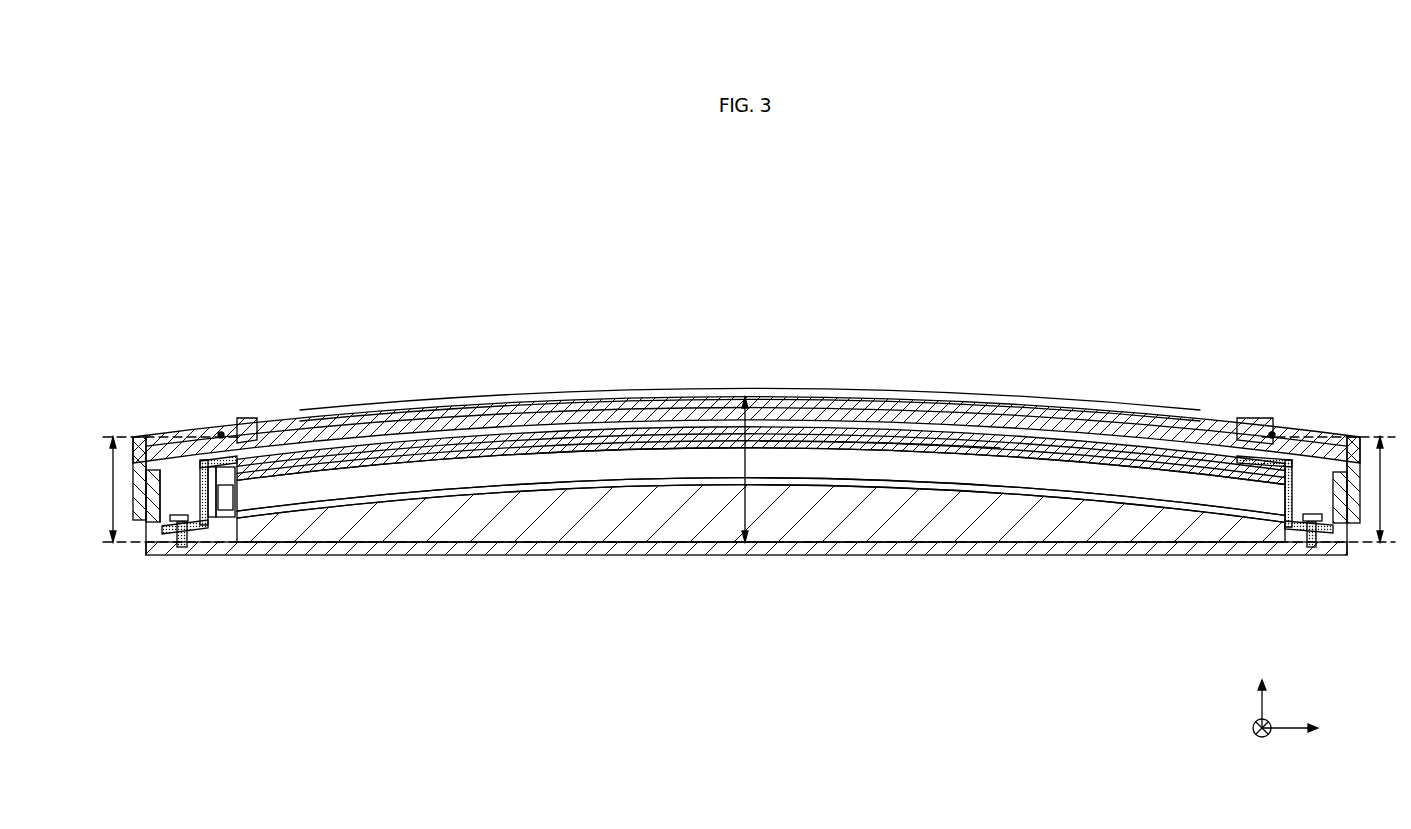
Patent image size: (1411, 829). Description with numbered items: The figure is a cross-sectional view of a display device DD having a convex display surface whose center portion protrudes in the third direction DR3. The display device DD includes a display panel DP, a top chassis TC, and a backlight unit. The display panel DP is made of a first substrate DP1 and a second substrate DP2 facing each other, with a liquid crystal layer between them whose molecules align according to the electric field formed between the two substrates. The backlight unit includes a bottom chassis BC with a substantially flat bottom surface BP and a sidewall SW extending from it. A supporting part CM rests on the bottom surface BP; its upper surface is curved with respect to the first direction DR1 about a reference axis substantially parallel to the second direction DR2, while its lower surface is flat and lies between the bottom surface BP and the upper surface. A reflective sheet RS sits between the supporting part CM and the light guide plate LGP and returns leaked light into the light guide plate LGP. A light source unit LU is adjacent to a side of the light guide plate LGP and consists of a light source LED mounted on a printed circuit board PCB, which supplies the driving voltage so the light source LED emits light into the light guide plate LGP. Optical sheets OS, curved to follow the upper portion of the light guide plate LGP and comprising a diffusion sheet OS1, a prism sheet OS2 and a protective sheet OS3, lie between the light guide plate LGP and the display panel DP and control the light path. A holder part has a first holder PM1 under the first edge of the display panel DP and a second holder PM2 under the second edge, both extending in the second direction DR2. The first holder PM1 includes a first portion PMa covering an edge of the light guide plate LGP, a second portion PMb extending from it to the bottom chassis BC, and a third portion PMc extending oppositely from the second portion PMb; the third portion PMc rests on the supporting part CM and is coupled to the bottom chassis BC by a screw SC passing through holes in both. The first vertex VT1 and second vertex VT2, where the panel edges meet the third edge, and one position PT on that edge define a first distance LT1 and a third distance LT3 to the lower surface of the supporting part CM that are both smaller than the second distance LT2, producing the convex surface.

The display device DD is at (1160, 335).
The first holder PM1 is at (173, 437).
The first portion PMa is at (199, 448).
The second portion PMb is at (202, 483).
The third portion PMc is at (150, 497).
The top chassis TC is at (250, 424).
The first vertex VT1 is at (222, 433).
The second vertex VT2 is at (1272, 433).
The second holder PM2 is at (1284, 456).
The display panel DP is at (750, 355).
The first substrate DP1 is at (386, 413).
The second substrate DP2 is at (375, 332).
The one position PT is at (747, 396).
The optical sheets OS is at (761, 387).
The diffusion sheet OS1 is at (878, 432).
The prism sheet OS2 is at (925, 435).
The protective sheet OS3 is at (870, 332).
The light guide plate LGP is at (679, 460).
The reflective sheet RS is at (827, 486).
The supporting part CM is at (746, 552).
The light source unit LU is at (254, 564).
The printed circuit board PCB is at (212, 520).
The light source LED is at (232, 512).
The bottom chassis BC is at (721, 565).
The sidewall SW is at (164, 545).
The bottom surface BP is at (180, 523).
The screw SC is at (184, 549).
The distance LT1 is at (110, 545).
The second distance LT2 is at (763, 469).
The third distance LT3 is at (1378, 522).
The first direction DR1 is at (1311, 728).
The second direction DR2 is at (1262, 742).
The third direction DR3 is at (1262, 687).